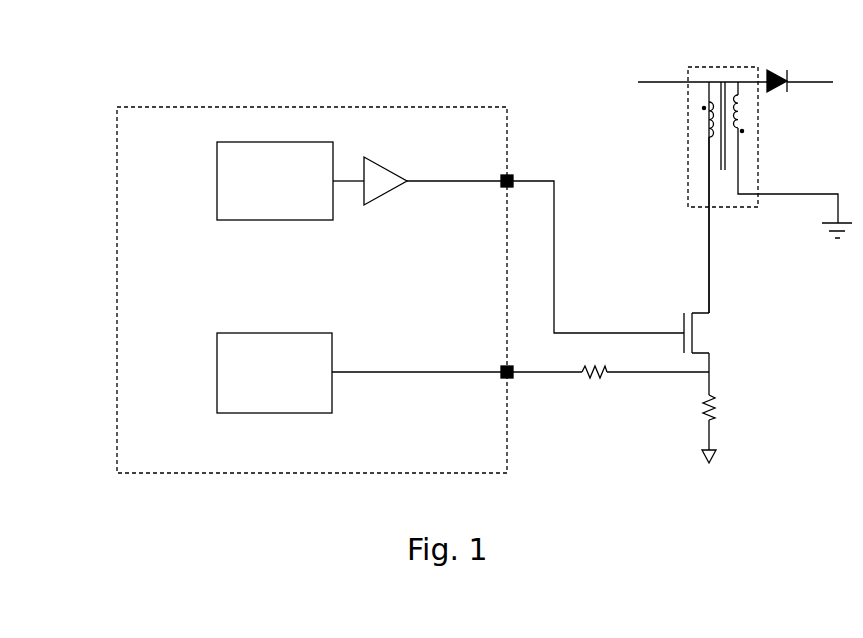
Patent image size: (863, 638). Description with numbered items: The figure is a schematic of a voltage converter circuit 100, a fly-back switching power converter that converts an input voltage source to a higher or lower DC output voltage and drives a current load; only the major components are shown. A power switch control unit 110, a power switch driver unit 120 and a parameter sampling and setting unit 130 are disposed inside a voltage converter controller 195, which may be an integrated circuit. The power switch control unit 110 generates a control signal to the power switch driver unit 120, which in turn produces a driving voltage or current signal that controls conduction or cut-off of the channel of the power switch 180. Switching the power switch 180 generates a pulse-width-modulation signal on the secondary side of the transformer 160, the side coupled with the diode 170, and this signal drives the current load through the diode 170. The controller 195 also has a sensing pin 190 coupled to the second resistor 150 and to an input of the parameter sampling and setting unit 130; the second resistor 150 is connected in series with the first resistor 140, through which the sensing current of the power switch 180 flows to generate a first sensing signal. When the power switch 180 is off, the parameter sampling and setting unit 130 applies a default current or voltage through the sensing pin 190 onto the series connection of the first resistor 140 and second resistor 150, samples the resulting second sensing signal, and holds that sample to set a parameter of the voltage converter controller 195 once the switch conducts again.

The voltage converter circuit 100 is at (73, 44).
The voltage converter controller 195 is at (158, 141).
The power switch control unit 110 is at (262, 213).
The power switch driver unit 120 is at (383, 165).
The parameter sampling and setting unit 130 is at (290, 404).
The sensing pin 190 is at (512, 380).
The second resistor 150 is at (595, 382).
The first resistor 140 is at (717, 415).
The power switch 180 is at (708, 332).
The transformer 160 is at (710, 66).
The diode 170 is at (780, 70).